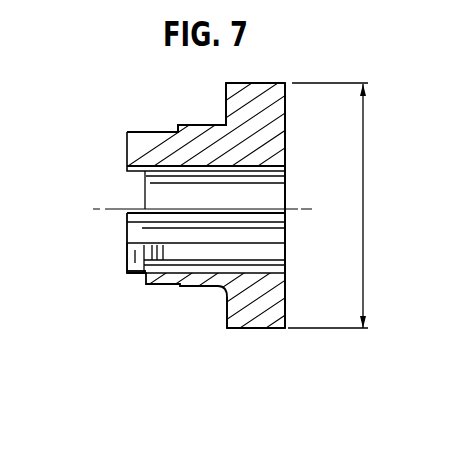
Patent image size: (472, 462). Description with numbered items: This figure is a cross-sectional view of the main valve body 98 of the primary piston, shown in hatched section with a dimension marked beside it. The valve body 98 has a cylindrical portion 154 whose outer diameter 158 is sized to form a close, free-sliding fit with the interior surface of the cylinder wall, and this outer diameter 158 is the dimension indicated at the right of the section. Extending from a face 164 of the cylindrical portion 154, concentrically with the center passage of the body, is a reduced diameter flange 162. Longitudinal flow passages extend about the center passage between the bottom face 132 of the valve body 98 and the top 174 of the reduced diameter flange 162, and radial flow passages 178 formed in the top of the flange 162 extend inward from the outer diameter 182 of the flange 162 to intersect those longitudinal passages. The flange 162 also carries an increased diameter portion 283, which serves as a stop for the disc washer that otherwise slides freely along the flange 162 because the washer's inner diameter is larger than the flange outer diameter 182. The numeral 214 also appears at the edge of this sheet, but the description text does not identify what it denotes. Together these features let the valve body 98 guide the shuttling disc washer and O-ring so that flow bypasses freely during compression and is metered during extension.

The valve body 98 is at (313, 73).
The bottom face 132 is at (287, 305).
The cylindrical portion 154 is at (250, 330).
The outer diameter 158 is at (365, 212).
The reduced diameter flange 162 is at (183, 158).
The face 164 is at (228, 307).
The top of the reduced diameter flange 174 is at (125, 155).
The radial flow passages 178 is at (132, 273).
The outer diameter of the flange 182 is at (148, 132).
The reference element 214 is at (459, 261).
The increased diameter portion 283 is at (197, 127).